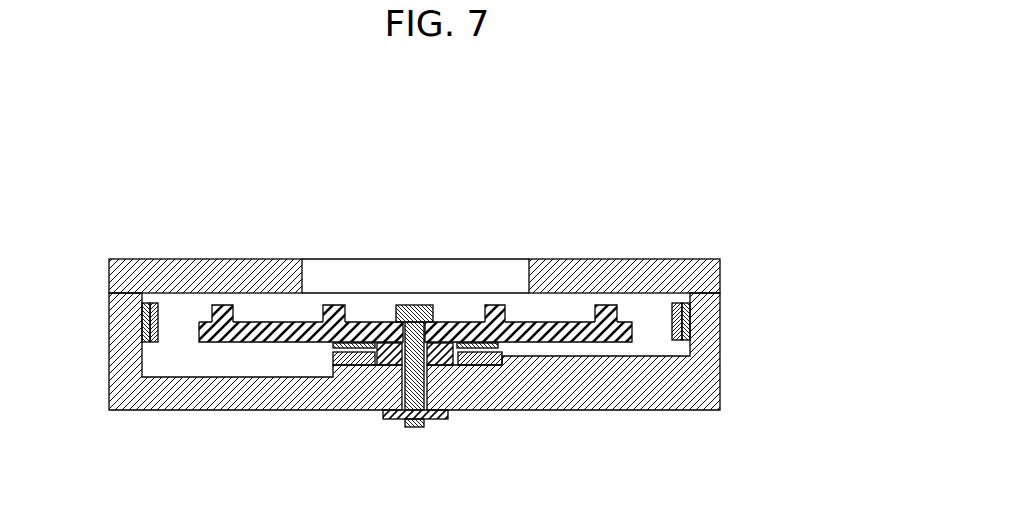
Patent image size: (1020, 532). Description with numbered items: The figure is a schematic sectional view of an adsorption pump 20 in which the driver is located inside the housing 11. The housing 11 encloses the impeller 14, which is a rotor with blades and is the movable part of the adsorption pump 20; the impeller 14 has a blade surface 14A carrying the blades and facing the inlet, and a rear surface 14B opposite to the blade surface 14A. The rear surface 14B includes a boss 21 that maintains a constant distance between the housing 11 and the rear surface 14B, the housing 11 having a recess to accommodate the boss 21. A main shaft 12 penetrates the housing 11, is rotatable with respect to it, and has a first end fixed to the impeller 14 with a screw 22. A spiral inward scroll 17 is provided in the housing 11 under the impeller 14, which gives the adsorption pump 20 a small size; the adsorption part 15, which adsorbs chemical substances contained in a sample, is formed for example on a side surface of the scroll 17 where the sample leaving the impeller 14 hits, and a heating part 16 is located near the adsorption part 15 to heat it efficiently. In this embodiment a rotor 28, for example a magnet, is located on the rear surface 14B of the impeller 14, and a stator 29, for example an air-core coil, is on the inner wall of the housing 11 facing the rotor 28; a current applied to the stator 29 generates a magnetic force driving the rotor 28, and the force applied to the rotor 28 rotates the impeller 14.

The housing 11 is at (663, 273).
The main shaft 12 is at (407, 430).
The impeller 14 is at (415, 245).
The blade surface 14A is at (335, 312).
The rear surface 14B is at (308, 328).
The adsorption part 15 is at (683, 308).
The heating part 16 is at (683, 336).
The scroll 17 is at (218, 365).
The adsorption pump 20 is at (641, 114).
The boss 21 is at (387, 352).
The screw 22 is at (423, 308).
The rotor 28 is at (498, 345).
The stator 29 is at (478, 365).